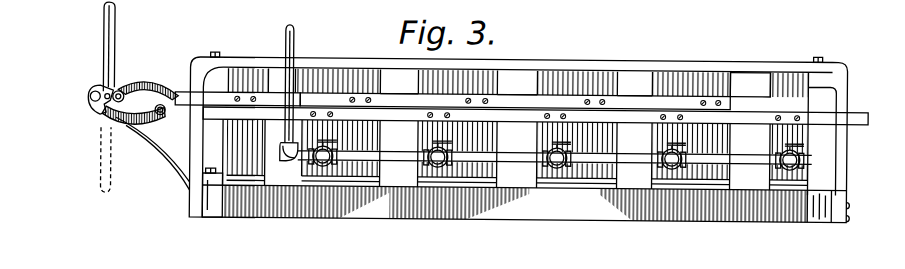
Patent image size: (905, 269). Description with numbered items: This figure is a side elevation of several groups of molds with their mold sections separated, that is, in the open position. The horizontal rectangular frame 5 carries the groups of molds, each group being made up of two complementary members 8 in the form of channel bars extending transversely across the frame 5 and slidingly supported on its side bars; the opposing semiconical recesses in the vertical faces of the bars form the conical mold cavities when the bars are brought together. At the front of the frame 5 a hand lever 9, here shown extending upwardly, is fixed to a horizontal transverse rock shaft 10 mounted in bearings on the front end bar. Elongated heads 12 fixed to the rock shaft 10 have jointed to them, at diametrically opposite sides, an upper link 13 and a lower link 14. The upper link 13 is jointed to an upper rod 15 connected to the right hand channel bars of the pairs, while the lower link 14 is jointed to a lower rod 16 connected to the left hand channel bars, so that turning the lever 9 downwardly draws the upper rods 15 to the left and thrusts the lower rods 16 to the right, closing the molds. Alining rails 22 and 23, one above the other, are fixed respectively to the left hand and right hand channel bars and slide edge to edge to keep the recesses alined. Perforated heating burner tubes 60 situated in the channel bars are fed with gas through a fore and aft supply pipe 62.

The horizontal rectangular frame 5 is at (391, 212).
The complementary members 8 is at (417, 133).
The hand lever 9 is at (103, 33).
The rock shaft 10 is at (115, 92).
The elongated heads 12 is at (96, 90).
The upper link 13 is at (152, 88).
The lower link 14 is at (113, 122).
The upper rods 15 is at (750, 85).
The lower rods 16 is at (290, 162).
The alining rail 22 is at (271, 96).
The alining rail 23 is at (323, 106).
The heating burner tubes 60 is at (553, 170).
The supply pipe 62 is at (605, 167).